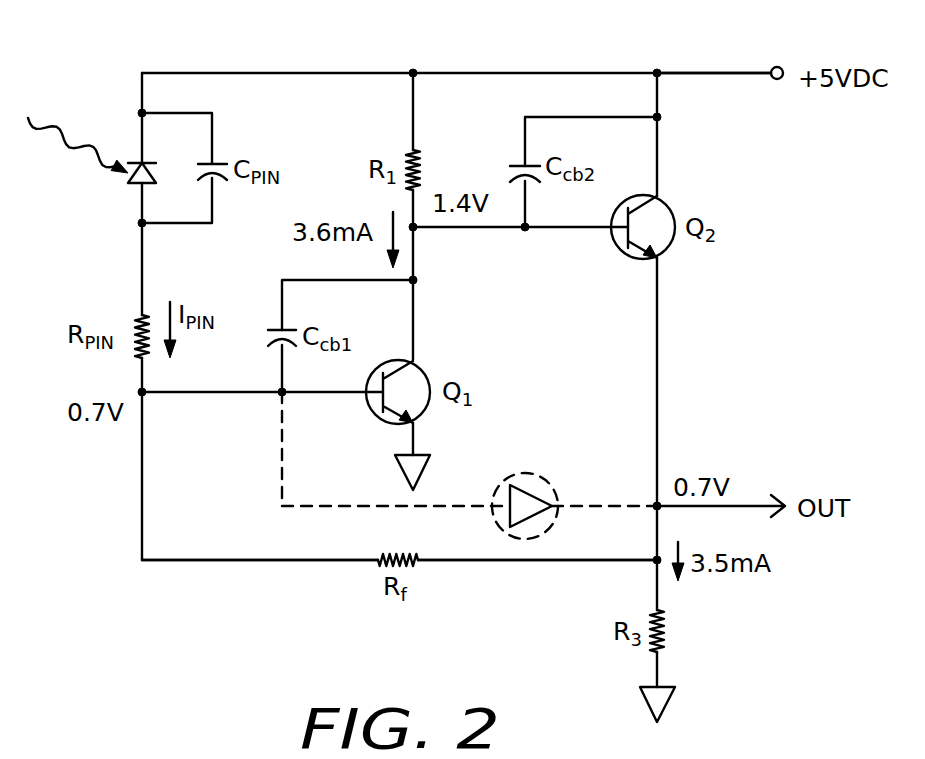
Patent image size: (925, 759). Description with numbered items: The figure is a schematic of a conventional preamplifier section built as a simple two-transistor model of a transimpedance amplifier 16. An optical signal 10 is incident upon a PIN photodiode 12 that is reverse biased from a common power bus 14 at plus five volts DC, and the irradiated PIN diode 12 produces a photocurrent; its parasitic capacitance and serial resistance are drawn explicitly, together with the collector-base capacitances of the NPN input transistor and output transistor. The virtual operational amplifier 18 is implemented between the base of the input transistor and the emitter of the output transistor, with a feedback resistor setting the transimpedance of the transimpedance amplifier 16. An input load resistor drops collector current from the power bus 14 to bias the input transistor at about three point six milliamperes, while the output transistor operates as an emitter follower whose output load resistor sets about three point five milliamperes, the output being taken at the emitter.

The optical signal 10 is at (85, 140).
The PIN photodiode 12 is at (138, 185).
The common power bus 14 is at (698, 72).
The transimpedance amplifier 16 is at (239, 572).
The operational amplifier 18 is at (548, 477).